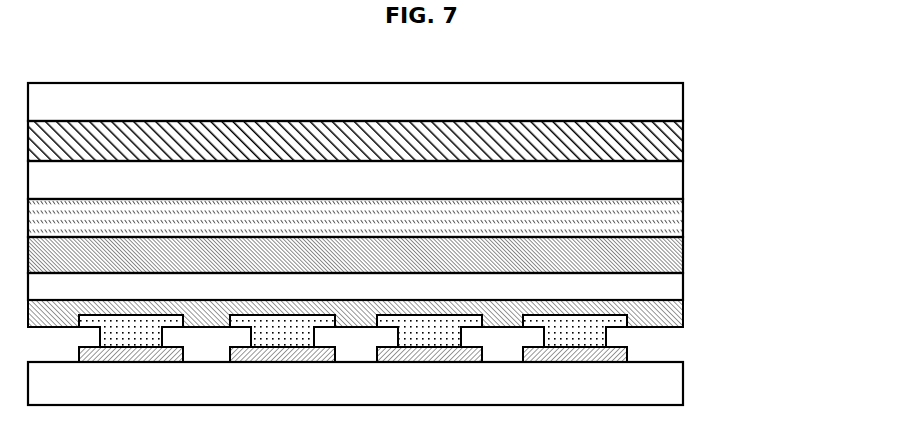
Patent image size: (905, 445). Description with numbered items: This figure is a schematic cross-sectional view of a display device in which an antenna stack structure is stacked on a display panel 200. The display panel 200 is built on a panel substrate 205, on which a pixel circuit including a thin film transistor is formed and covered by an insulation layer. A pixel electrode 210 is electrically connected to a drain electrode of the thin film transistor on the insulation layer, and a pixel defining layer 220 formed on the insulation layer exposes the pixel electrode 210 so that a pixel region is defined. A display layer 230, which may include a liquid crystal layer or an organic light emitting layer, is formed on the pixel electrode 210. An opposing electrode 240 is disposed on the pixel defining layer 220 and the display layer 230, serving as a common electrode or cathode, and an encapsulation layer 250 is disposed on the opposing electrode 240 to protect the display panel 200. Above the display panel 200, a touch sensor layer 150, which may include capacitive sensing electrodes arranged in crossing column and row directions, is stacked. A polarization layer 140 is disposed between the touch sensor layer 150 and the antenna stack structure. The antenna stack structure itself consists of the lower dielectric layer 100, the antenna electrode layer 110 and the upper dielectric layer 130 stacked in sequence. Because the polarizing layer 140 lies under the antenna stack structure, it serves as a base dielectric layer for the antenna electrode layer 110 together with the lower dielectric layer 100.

The upper dielectric layer 130 is at (665, 97).
The antenna electrode layer 110 is at (684, 136).
The lower dielectric layer 100 is at (665, 187).
The polarization layer 140 is at (684, 217).
The touch sensor layer 150 is at (684, 245).
The display panel 200 is at (449, 335).
The encapsulation layer 250 is at (675, 290).
The opposing electrode 240 is at (684, 297).
The display layer 230 is at (588, 327).
The pixel defining layer 220 is at (684, 335).
The pixel electrode 210 is at (628, 357).
The panel substrate 205 is at (415, 383).